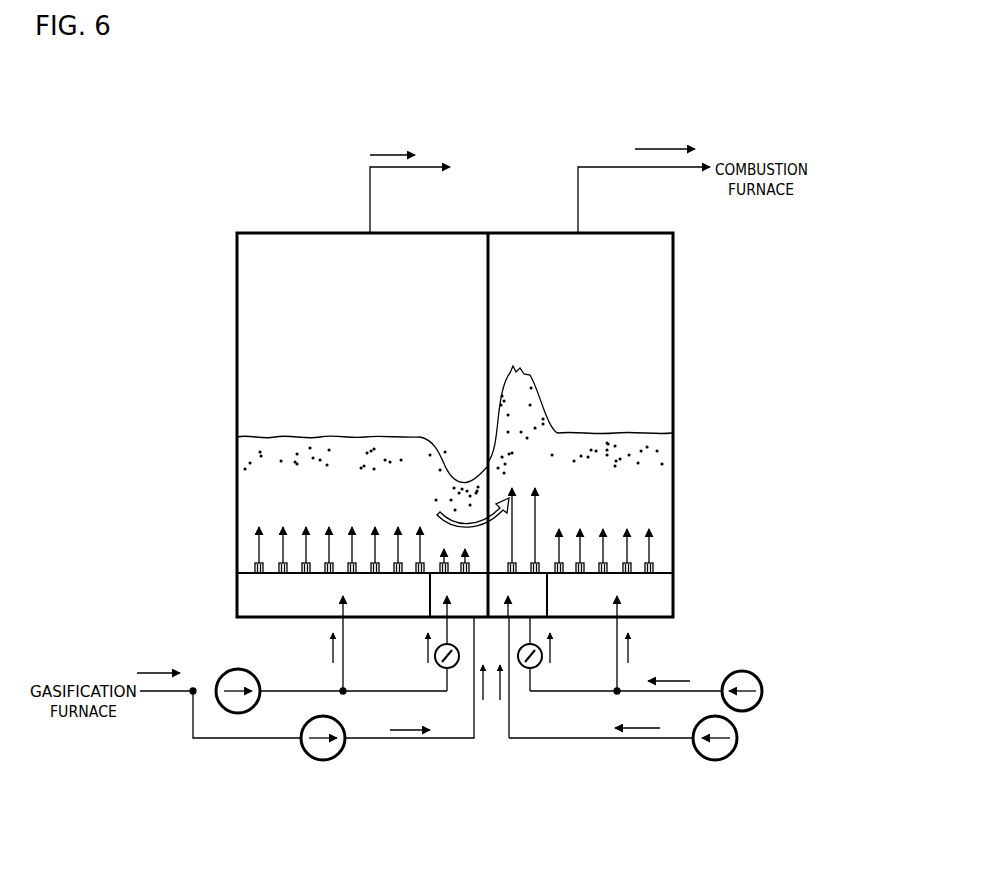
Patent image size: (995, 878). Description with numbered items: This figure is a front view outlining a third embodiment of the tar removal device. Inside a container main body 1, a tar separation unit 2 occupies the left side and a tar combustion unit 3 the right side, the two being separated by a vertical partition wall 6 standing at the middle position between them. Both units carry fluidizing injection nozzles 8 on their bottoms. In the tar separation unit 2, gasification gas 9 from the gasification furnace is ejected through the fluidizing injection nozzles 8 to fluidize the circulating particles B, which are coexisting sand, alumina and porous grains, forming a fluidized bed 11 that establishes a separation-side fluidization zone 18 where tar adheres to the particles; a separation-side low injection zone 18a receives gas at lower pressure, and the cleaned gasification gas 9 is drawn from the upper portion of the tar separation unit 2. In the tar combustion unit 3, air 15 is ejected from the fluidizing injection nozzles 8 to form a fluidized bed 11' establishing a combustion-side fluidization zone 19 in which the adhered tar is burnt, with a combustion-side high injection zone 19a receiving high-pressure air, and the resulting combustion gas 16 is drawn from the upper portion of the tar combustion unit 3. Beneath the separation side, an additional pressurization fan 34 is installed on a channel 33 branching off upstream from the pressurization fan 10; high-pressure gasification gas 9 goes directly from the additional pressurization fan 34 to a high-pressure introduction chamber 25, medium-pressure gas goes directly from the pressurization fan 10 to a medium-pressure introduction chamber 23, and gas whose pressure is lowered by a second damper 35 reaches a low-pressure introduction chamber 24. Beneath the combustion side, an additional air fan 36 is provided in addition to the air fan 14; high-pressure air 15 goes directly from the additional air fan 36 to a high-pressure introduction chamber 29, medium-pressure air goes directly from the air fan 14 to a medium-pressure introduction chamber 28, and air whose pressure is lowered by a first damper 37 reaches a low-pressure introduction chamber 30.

The container main body 1 is at (237, 253).
The tar separation unit 2 is at (283, 381).
The tar combustion unit 3 is at (636, 340).
The vertical partition wall 6 is at (490, 266).
The fluidizing injection nozzles 8 is at (283, 563).
The gasification gas 9 is at (384, 152).
The pressurization fan 10 is at (226, 674).
The fluidized bed 11 is at (330, 421).
The fluidized bed 11' is at (615, 419).
The air fan 14 is at (754, 675).
The air 15 is at (680, 680).
The combustion gas 16 is at (655, 148).
The separation-side fluidization zone 18 is at (332, 434).
The separation-side low injection zone 18a is at (465, 476).
The combustion-side fluidization zone 19 is at (630, 430).
The combustion-side high injection zone 19a is at (521, 366).
The medium-pressure introduction chamber 23 is at (278, 591).
The low-pressure introduction chamber 24 is at (430, 587).
The high-pressure introduction chamber 25 is at (477, 603).
The medium-pressure introduction chamber 28 is at (640, 598).
The high-pressure introduction chamber 29 is at (535, 590).
The low-pressure introduction chamber 30 is at (518, 607).
The channel 33 is at (243, 740).
The additional pressurization fan 34 is at (325, 761).
The second damper 35 is at (436, 667).
The additional air fan 36 is at (715, 761).
The first damper 37 is at (541, 667).
The circulating particles B is at (396, 447).